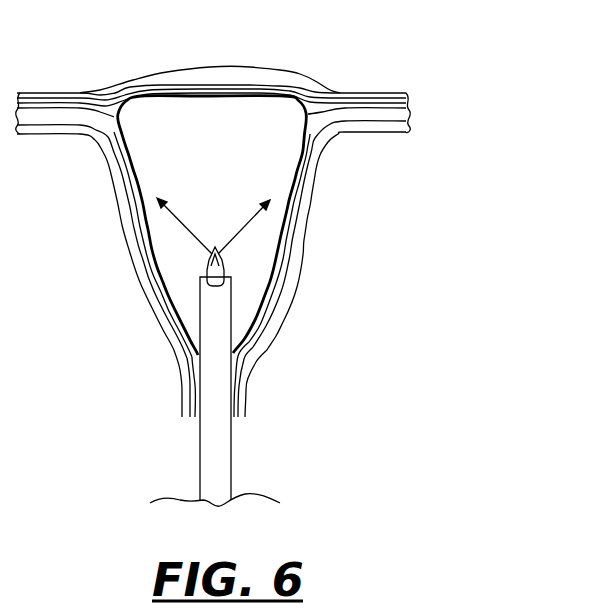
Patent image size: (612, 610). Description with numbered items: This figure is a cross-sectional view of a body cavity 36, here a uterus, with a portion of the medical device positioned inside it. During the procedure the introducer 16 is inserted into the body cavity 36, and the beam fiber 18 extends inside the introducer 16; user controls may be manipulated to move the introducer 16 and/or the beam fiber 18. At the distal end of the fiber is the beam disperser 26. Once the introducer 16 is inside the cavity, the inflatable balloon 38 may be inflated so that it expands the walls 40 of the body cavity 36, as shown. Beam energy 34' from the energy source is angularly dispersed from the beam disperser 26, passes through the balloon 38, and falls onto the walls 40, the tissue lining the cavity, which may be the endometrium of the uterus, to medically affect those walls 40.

The introducer 16 is at (222, 469).
The beam fiber 18 is at (224, 274).
The beam disperser 26 is at (196, 254).
The beam energy 34' is at (213, 222).
The body cavity 36 is at (232, 118).
The inflatable balloon 38 is at (285, 253).
The walls 40 is at (243, 338).